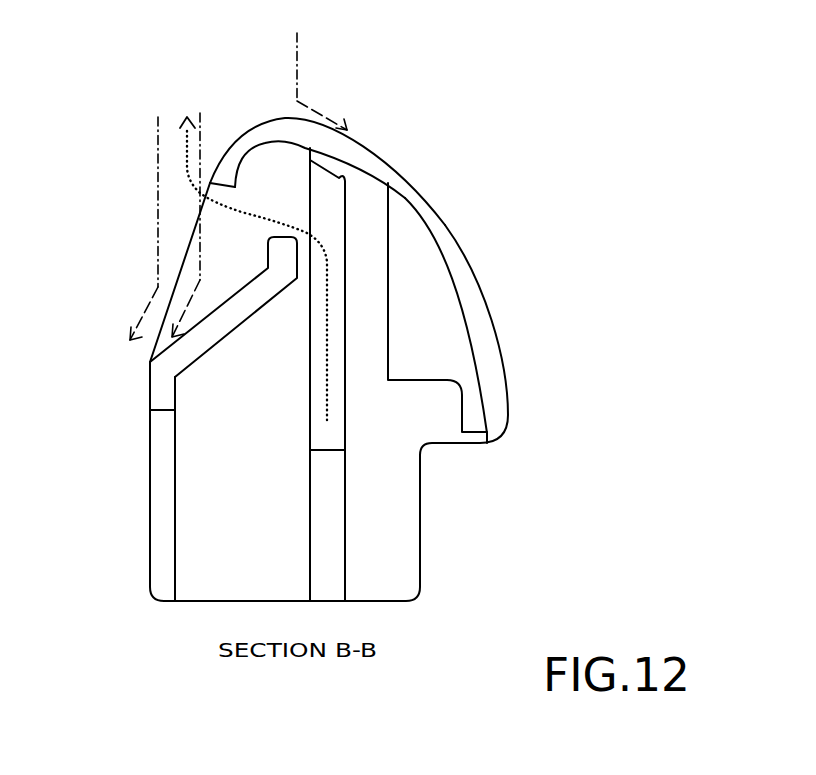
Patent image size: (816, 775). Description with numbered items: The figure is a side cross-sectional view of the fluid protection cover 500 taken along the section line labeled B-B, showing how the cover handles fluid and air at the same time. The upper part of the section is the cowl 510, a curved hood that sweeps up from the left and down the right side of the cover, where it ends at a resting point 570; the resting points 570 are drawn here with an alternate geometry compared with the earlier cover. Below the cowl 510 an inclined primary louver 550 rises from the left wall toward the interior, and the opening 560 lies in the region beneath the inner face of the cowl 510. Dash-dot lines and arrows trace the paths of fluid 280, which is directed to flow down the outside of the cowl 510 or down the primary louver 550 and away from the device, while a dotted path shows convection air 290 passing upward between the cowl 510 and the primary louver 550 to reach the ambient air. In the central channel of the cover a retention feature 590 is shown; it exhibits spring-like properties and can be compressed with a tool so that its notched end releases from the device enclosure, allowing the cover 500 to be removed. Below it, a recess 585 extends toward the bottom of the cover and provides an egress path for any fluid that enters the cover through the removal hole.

The fluid protection cover 500 is at (77, 122).
The fluid 280 is at (297, 43).
The cowl 510 is at (243, 145).
The primary louver 550 is at (243, 303).
The opening 560 is at (360, 240).
The resting points 570 is at (457, 332).
The convection air 290 is at (325, 340).
The retention features 590 is at (345, 430).
The recesses 585 is at (325, 553).